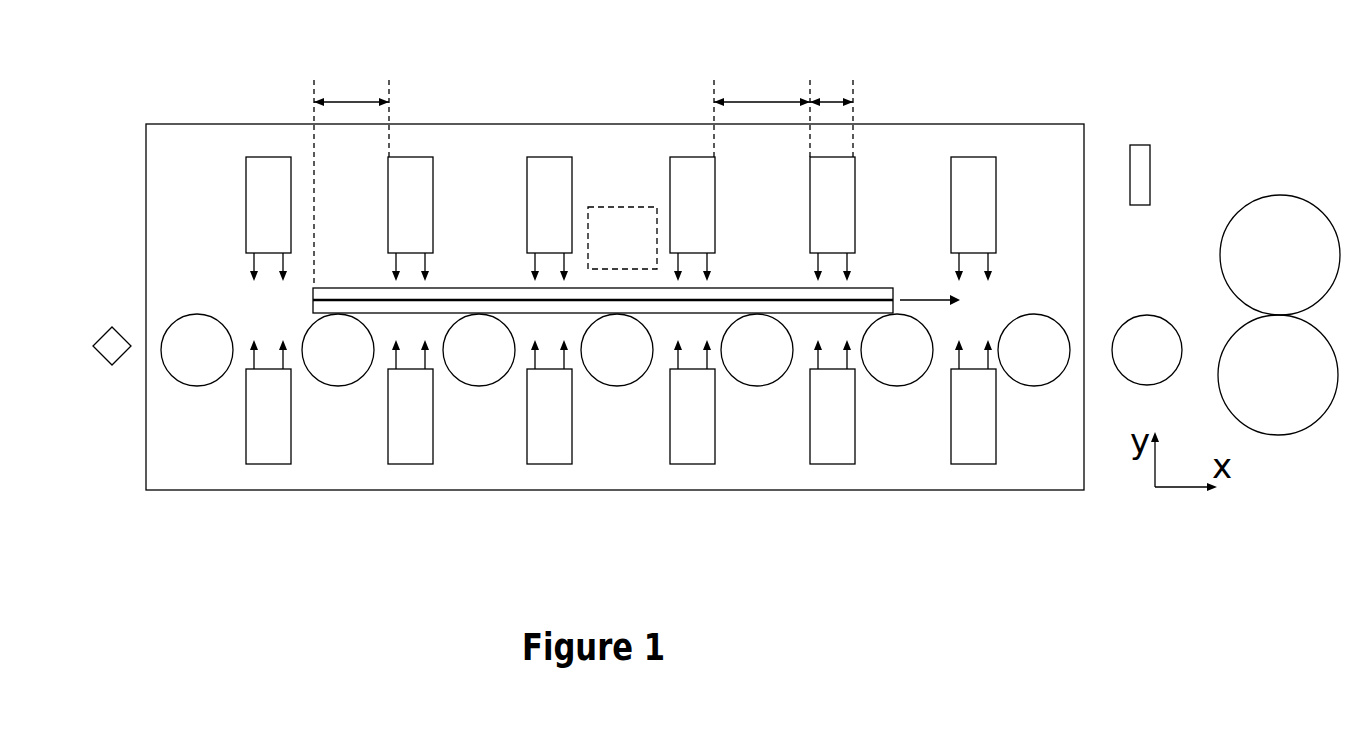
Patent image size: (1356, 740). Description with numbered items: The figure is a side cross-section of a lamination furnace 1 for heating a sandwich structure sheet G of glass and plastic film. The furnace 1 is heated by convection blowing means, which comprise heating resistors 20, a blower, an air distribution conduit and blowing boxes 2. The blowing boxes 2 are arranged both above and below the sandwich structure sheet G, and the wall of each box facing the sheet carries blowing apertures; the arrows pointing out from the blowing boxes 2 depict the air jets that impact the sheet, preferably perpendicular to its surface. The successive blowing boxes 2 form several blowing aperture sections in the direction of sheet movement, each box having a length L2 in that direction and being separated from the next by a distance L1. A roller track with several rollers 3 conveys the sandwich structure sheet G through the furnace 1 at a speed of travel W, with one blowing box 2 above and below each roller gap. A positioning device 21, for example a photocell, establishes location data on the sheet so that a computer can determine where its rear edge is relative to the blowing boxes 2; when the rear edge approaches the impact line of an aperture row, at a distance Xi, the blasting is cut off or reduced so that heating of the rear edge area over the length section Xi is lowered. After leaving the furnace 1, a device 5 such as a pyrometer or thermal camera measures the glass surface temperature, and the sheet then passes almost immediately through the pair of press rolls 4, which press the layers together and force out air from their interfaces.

The lamination furnace 1 is at (190, 124).
The blowing box 2 is at (433, 213).
The roller 3 is at (610, 387).
The pair of press rolls 4 is at (1280, 196).
The device for measuring glass surface temperature 5 is at (1150, 175).
The heating resistor 20 is at (630, 207).
The positioning device 21 is at (112, 327).
The sandwich structure sheet G is at (498, 287).
The speed of travel W is at (925, 300).
The distance at cut-off of blasting Xi is at (351, 100).
The distance between blowing boxes L1 is at (759, 100).
The length of blowing box L2 is at (827, 100).